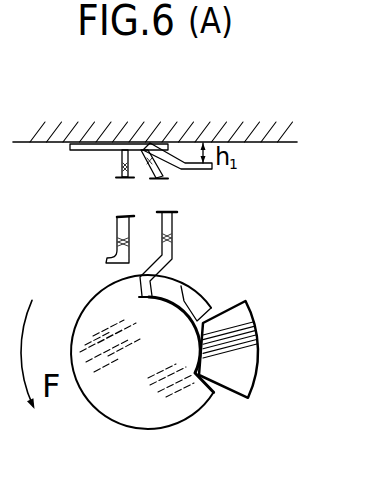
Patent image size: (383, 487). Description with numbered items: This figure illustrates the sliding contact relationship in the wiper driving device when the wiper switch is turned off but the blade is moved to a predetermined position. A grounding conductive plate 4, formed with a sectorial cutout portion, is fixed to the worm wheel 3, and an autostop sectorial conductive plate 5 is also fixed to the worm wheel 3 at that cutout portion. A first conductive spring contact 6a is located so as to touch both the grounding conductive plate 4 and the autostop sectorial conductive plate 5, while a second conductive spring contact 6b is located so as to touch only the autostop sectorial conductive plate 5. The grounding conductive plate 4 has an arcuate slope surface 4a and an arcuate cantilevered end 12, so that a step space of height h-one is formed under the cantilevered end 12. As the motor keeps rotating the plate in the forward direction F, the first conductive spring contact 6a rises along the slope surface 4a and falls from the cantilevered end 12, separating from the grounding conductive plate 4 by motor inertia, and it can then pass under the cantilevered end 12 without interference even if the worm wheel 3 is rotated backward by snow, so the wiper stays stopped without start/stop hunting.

The worm wheel 3 is at (280, 128).
The grounding conductive plate 4 is at (75, 149).
The slope surface 4a is at (187, 164).
The autostop sectorial conductive plate 5 is at (248, 302).
The first conductive spring contact 6a is at (167, 173).
The second conductive spring contact 6b is at (120, 166).
The arcuate cantilevered end 12 is at (203, 303).